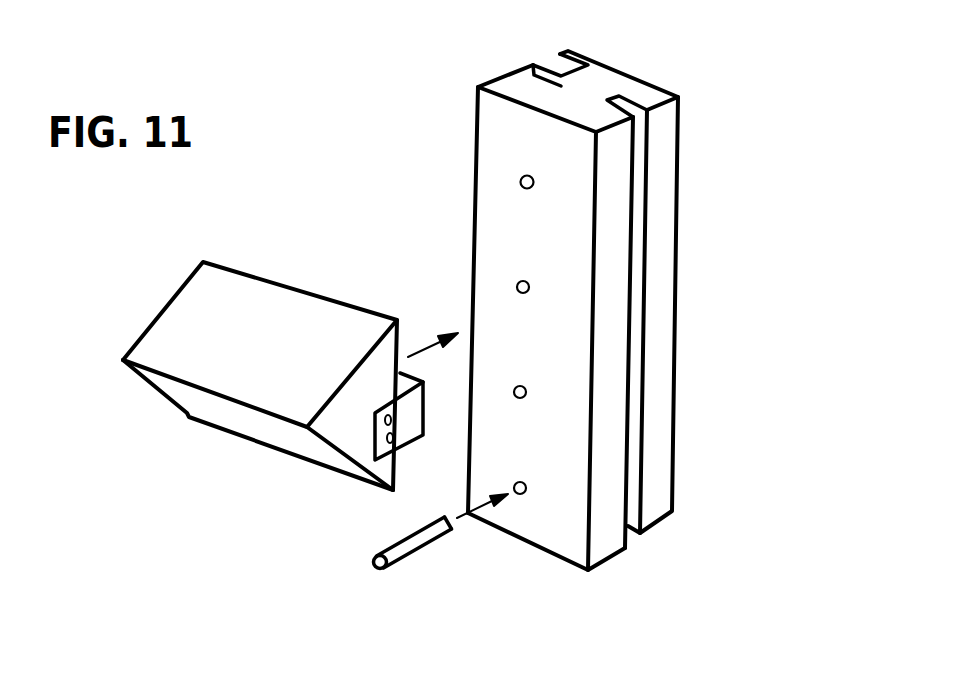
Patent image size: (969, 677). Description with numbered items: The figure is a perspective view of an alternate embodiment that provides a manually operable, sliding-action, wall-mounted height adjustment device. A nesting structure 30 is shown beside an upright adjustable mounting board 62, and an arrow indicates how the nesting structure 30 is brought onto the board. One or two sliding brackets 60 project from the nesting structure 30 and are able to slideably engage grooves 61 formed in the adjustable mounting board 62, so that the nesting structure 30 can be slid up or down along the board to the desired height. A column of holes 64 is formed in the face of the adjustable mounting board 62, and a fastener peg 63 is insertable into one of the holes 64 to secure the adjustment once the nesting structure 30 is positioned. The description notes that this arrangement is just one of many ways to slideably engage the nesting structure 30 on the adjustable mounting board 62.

The nesting structure 30 is at (108, 243).
The sliding bracket 60 is at (403, 413).
The grooves 61 is at (537, 68).
The adjustable mounting board 62 is at (728, 65).
The fastener peg 63 is at (418, 543).
The holes 64 is at (517, 388).